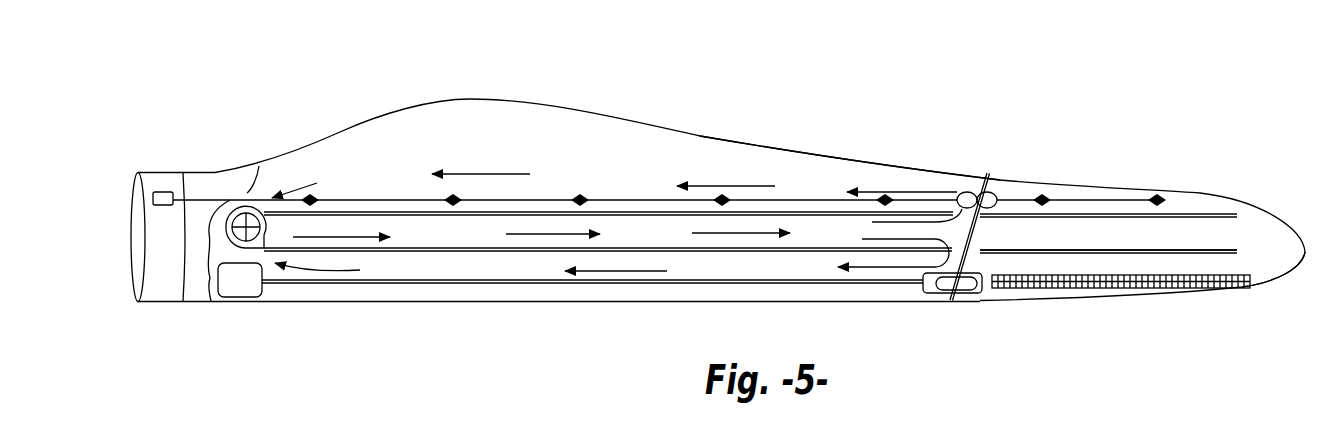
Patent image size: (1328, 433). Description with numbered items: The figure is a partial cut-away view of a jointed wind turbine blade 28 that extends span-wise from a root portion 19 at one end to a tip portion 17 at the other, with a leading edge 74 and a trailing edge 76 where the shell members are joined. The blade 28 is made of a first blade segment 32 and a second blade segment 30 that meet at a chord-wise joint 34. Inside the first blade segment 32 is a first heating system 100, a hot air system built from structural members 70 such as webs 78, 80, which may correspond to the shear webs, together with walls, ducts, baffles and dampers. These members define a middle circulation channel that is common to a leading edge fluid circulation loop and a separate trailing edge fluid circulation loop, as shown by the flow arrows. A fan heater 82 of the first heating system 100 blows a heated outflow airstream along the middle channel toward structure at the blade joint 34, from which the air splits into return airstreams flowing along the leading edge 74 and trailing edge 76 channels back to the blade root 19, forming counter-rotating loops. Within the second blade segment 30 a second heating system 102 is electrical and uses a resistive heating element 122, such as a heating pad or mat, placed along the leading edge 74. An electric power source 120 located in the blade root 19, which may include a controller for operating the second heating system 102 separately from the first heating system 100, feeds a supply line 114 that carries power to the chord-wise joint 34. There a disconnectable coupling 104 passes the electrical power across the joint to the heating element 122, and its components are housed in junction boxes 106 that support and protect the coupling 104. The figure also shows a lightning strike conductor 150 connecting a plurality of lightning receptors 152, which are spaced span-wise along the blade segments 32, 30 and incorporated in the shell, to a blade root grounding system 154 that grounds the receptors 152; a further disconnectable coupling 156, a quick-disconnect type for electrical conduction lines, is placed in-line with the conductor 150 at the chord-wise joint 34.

The tip portion 17 is at (1270, 245).
The root portion 19 is at (183, 240).
The jointed wind turbine blade 28 is at (857, 100).
The second blade segment 30 is at (1192, 192).
The first blade segment 32 is at (500, 98).
The chord-wise joint 34 is at (968, 192).
The structural members 70 is at (611, 205).
The leading edge 74 is at (473, 302).
The trailing edge 76 is at (805, 153).
The web 78 is at (381, 210).
The web 80 is at (425, 251).
The fan heater 82 is at (243, 208).
The first heating system 100 is at (338, 185).
The second heating system 102 is at (1062, 263).
The disconnectable coupling 104 is at (958, 302).
The junction boxes 106 is at (923, 293).
The supply conduit or line 114 is at (640, 284).
The electric power source 120 is at (238, 297).
The resistive heating element 122 is at (1097, 290).
The lightning strike conductor 150 is at (566, 200).
The lightning receptors 152 is at (718, 200).
The blade root grounding system 154 is at (162, 192).
The disconnectable coupling 156 is at (985, 192).